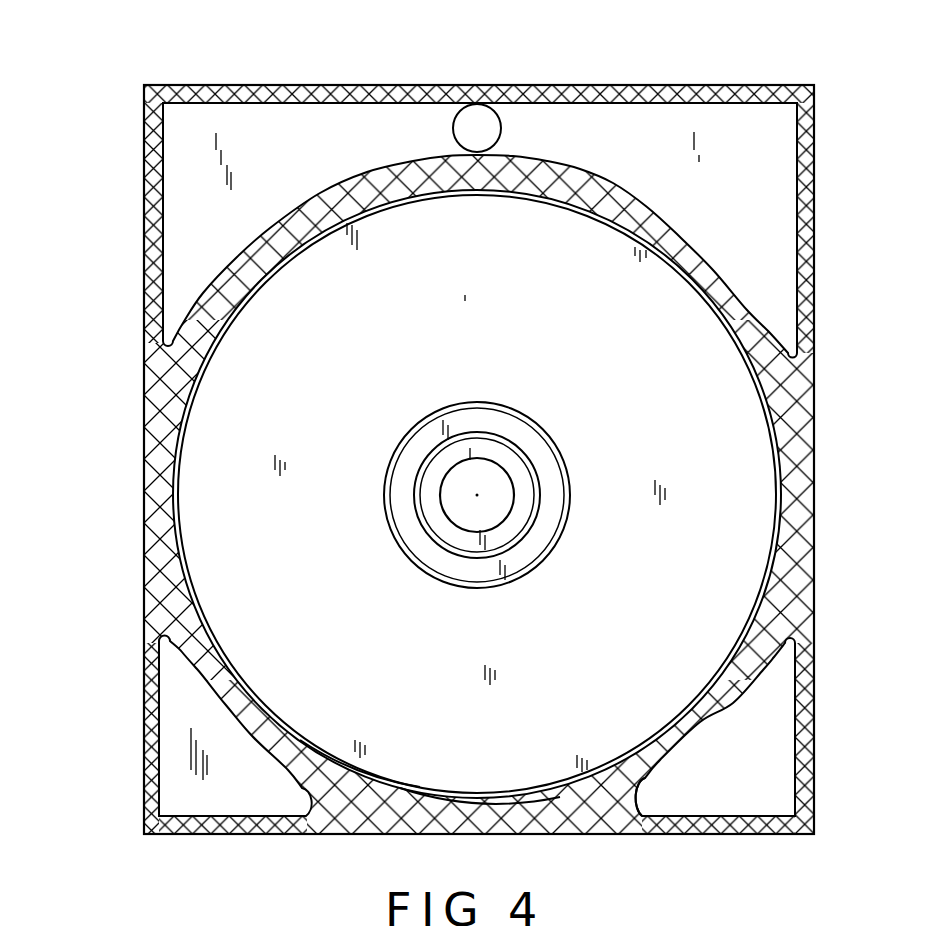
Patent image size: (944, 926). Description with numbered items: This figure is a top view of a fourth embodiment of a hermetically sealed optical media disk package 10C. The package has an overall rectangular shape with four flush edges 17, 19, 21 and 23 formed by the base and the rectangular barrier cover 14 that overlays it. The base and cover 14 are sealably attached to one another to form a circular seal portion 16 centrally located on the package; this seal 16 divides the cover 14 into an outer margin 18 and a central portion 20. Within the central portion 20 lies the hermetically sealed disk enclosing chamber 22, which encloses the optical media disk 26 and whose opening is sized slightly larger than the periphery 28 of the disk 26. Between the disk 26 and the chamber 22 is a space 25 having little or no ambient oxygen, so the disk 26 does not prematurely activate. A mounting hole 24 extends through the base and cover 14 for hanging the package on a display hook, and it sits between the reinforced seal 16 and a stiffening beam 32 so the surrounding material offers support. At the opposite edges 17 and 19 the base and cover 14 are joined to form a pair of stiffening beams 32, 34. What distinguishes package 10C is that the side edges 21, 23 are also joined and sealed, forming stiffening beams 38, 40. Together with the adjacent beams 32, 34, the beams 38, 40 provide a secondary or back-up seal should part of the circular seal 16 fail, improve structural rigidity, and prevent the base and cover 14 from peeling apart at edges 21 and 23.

The fourth embodiment package 10C is at (771, 60).
The barrier cover 14 is at (608, 385).
The circular seal portion 16 is at (703, 720).
The flush edge 17 is at (205, 92).
The outer margin 18 is at (763, 150).
The flush edge 19 is at (218, 815).
The central portion 20 is at (732, 483).
The side edge 21 is at (148, 268).
The disk enclosing chamber 22 is at (558, 790).
The side edge 23 is at (800, 248).
The mounting hole 24 is at (501, 130).
The space 25 is at (627, 781).
The optical media disk 26 is at (385, 762).
The periphery 28 is at (743, 570).
The stiffening beam 32 is at (628, 88).
The stiffening beam 34 is at (735, 830).
The stiffening beam 38 is at (148, 619).
The stiffening beam 40 is at (811, 708).